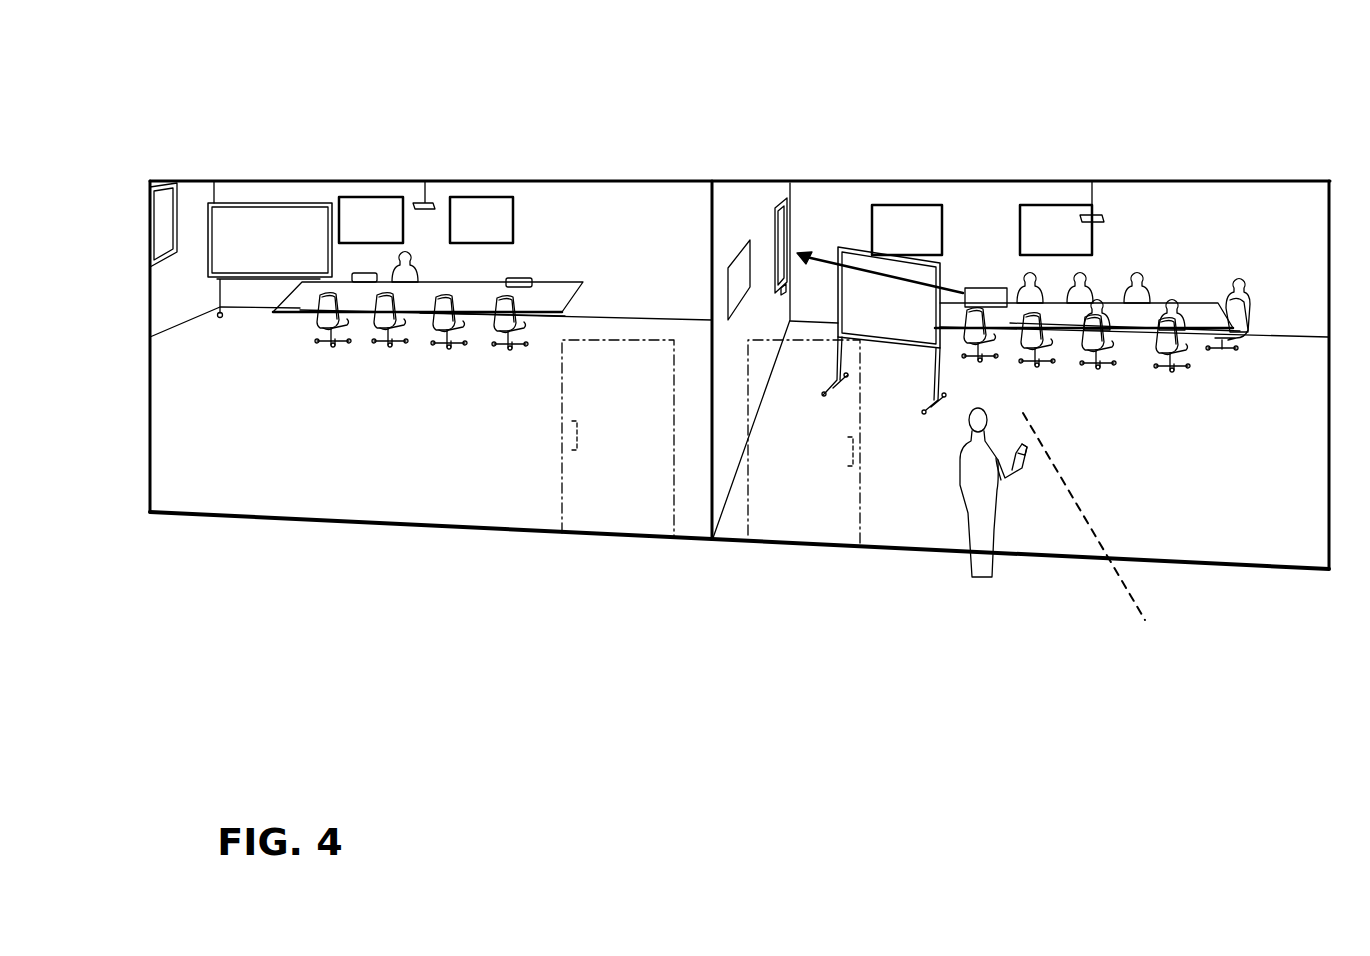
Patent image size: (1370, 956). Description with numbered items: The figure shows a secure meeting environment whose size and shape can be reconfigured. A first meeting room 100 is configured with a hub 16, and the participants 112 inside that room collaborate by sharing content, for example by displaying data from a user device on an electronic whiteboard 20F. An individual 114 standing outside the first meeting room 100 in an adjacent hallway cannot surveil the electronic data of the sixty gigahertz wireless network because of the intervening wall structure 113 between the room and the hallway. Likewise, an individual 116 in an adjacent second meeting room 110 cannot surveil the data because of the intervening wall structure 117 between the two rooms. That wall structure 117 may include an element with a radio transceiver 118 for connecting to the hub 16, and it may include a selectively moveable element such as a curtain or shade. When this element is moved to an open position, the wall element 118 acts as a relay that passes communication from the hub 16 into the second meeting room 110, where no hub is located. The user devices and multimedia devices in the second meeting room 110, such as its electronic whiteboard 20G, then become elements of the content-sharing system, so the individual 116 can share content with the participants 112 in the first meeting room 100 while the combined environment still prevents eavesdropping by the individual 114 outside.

The second meeting room 110 is at (253, 178).
The electronic whiteboard 20G is at (290, 222).
The individual 116 is at (403, 258).
The radio transceiver 118 is at (738, 263).
The intervening wall structure 117 is at (760, 252).
The electronic whiteboard 20F is at (895, 270).
The hub 16 is at (982, 293).
The participants 112 is at (1028, 272).
The first meeting room 100 is at (1188, 175).
The individual 114 is at (975, 563).
The intervening wall structure 113 is at (1087, 526).